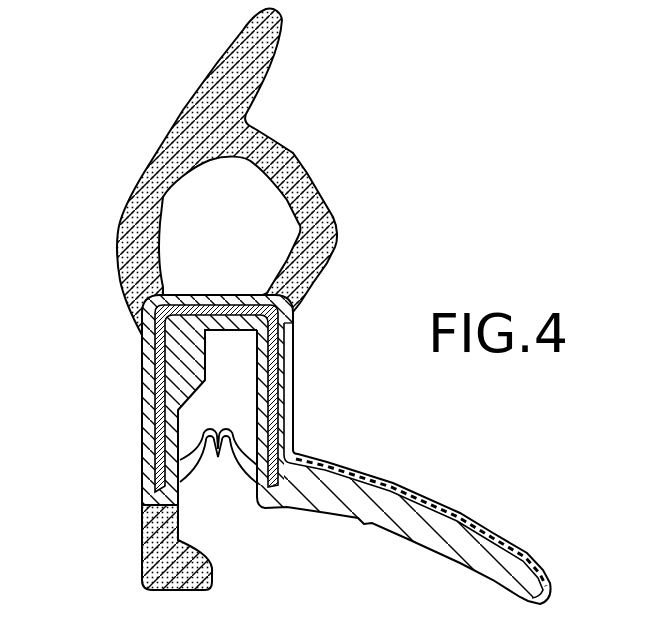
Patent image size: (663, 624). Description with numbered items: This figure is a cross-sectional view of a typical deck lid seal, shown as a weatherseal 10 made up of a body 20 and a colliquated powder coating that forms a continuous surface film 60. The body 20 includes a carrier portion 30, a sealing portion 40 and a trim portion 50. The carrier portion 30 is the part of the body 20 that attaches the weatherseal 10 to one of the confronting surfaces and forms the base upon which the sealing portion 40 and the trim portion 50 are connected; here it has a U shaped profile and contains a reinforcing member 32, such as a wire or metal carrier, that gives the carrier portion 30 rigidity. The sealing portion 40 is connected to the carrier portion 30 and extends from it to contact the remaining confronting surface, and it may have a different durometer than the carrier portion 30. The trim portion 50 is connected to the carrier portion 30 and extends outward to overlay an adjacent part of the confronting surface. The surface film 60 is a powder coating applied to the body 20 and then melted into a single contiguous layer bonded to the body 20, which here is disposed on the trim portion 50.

The weatherseal 10 is at (304, 308).
The body 20 is at (304, 451).
The carrier portion 30 is at (180, 490).
The reinforcing member 32 is at (142, 440).
The sealing portion 40 is at (299, 160).
The trim portion 50 is at (401, 523).
The surface film 60 is at (463, 510).